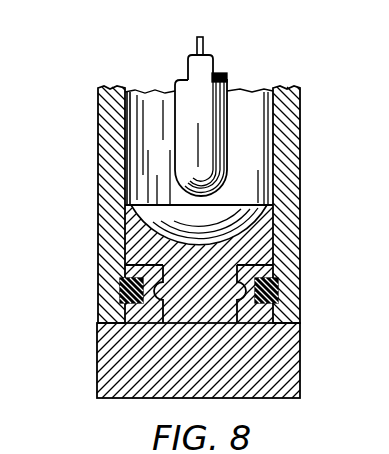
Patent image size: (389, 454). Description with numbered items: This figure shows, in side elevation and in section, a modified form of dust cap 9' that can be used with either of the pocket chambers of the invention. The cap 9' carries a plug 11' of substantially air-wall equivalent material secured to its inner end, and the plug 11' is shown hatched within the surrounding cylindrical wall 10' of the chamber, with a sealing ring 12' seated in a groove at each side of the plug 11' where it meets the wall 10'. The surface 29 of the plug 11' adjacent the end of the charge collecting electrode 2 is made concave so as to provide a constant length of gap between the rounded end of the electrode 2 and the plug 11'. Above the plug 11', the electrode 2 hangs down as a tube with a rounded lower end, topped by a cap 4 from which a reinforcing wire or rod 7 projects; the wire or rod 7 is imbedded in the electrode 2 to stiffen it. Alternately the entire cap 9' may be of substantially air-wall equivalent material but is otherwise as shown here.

The charge collecting electrode 2 is at (173, 147).
The cap 4 is at (214, 64).
The reinforcing wire or rod 7 is at (204, 44).
The concave surface 29 is at (150, 200).
The modified dust cap 9' is at (213, 360).
The cylinder 10' is at (223, 216).
The plug 11' is at (239, 264).
The packing ring 12' is at (244, 290).